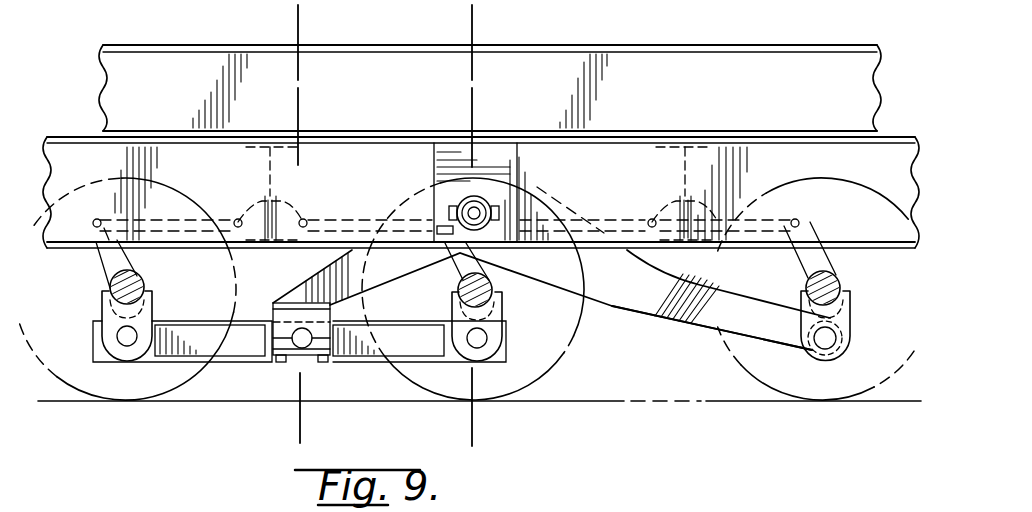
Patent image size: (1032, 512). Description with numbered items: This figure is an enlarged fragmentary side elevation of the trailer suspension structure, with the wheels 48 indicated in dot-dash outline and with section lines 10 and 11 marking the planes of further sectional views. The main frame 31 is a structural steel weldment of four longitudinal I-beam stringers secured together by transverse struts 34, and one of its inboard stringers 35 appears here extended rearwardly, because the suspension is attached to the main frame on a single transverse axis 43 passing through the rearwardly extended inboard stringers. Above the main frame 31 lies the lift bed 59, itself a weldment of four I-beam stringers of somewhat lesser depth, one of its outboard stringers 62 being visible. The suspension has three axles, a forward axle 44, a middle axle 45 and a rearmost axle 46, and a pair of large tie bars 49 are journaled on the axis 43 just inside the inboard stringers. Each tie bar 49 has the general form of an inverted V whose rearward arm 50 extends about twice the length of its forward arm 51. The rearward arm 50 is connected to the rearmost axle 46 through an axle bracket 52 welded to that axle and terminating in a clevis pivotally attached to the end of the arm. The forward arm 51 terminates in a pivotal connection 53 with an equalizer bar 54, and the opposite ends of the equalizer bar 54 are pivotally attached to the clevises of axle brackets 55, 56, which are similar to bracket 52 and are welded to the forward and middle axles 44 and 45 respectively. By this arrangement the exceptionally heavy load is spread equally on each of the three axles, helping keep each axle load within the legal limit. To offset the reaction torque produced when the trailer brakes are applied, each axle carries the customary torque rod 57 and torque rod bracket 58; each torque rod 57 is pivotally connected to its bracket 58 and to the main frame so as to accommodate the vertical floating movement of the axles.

The section line 10- 10 is at (270, 17).
The section line 11- 11 is at (434, 17).
The main frame 31 is at (90, 130).
The transverse struts 34 is at (285, 178).
The inboard stringer 35 is at (160, 147).
The transverse axis 43 is at (480, 206).
The forward axle 44 is at (144, 281).
The middle axle 45 is at (494, 290).
The rearmost axle 46 is at (836, 280).
The wheels 48 is at (174, 396).
The tie bar 49 is at (627, 314).
The rearward arm 50 is at (776, 346).
The forward arm 51 is at (305, 285).
The axle bracket 52 is at (851, 314).
The pivotal connection 53 is at (303, 340).
The equalizer bar 54 is at (228, 361).
The axle bracket 55 is at (100, 316).
The axle bracket 56 is at (502, 314).
The torque rod 57 is at (180, 218).
The torque rod bracket 58 is at (100, 269).
The lift bed 59 is at (681, 41).
The outboard stringer 62 is at (776, 62).